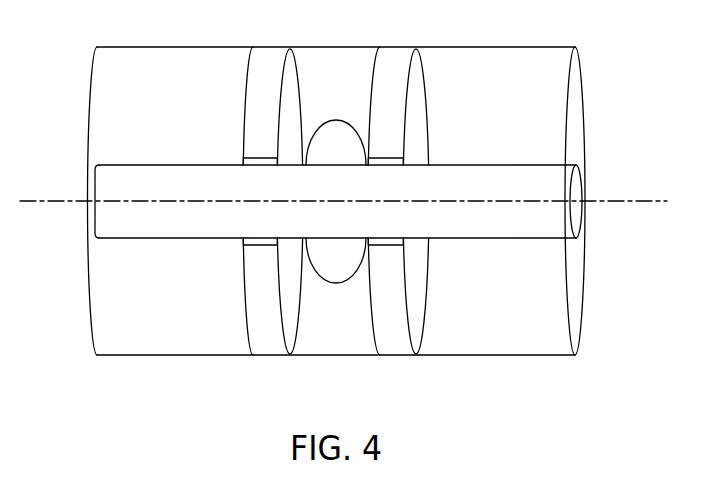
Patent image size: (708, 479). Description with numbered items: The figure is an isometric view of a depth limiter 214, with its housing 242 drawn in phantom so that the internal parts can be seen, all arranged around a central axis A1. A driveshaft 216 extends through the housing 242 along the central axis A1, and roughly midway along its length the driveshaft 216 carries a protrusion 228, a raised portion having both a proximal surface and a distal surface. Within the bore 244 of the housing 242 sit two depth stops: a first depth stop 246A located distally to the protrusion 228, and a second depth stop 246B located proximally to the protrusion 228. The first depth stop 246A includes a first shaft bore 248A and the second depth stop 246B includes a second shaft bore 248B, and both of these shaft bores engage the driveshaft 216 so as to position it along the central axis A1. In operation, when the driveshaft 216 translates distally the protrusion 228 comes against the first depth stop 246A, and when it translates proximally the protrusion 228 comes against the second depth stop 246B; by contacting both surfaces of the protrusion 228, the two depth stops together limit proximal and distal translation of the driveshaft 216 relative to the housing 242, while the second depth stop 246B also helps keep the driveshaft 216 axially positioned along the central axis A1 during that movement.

The depth limiter 214 is at (344, 44).
The driveshaft 216 is at (108, 182).
The protrusion 228 is at (342, 263).
The housing 242 is at (338, 357).
The bore 244 is at (163, 240).
The first depth stop 246A is at (396, 345).
The second depth stop 246B is at (270, 62).
The first shaft bore 248A is at (385, 157).
The second shaft bore 248B is at (262, 157).
The central axis A1 is at (612, 202).